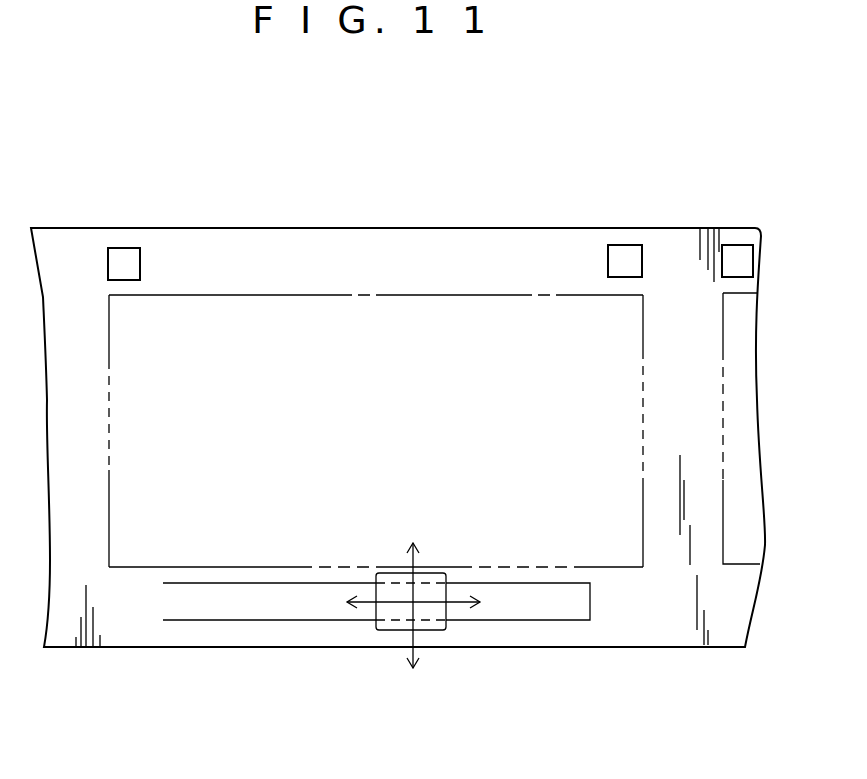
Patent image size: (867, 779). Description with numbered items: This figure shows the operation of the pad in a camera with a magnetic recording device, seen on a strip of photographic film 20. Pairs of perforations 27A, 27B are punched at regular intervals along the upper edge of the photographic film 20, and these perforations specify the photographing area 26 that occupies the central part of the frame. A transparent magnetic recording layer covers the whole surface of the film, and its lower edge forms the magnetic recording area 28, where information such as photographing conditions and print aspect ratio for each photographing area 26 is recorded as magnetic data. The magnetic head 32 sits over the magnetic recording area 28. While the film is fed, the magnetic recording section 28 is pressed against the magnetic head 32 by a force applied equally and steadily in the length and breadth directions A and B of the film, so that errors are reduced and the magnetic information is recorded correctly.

The photographic film 20 is at (347, 225).
The photographing area 26 is at (275, 297).
The perforation 27A is at (124, 258).
The perforation 27B is at (627, 253).
The magnetic recording area 28 is at (217, 615).
The magnetic head 32 is at (438, 613).